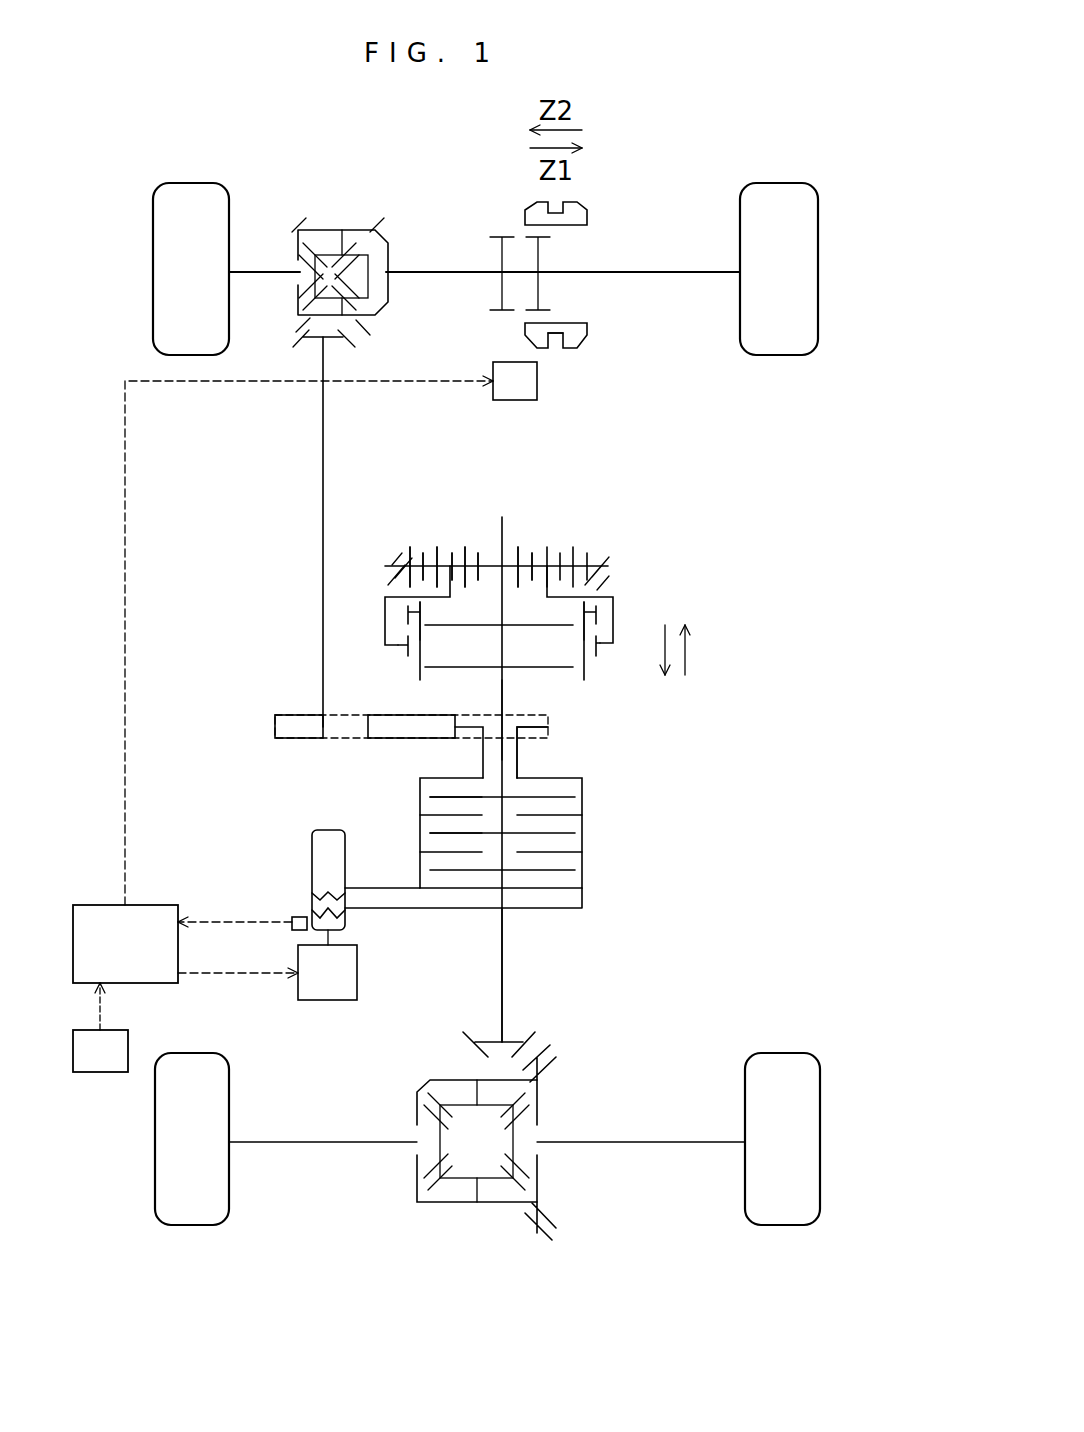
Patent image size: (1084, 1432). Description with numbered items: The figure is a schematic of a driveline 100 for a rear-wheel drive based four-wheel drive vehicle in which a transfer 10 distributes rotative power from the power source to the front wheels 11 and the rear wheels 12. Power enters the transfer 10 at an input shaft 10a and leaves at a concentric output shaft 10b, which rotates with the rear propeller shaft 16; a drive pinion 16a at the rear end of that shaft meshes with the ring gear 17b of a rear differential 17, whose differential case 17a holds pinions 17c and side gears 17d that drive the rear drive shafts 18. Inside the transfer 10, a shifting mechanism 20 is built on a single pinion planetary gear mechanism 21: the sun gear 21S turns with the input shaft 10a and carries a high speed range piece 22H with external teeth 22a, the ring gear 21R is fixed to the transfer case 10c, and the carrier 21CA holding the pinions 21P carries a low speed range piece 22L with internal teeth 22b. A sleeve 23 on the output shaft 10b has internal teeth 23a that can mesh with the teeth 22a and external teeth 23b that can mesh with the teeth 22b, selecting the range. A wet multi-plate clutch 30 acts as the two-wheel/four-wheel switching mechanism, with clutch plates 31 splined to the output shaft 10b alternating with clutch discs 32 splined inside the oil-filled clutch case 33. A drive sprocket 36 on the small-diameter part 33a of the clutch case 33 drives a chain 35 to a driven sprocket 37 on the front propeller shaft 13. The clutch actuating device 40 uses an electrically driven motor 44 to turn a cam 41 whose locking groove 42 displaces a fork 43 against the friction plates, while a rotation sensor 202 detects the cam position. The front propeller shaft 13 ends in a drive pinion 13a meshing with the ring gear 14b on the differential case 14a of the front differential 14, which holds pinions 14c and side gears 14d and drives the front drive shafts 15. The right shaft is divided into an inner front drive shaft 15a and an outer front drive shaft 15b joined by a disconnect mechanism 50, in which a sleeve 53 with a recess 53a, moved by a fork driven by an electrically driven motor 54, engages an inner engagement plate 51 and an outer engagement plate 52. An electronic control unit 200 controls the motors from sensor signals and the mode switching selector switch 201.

The driveline 100 is at (713, 166).
The front wheel 11 is at (205, 183).
The rear wheel 12 is at (195, 1225).
The front drive shaft 15 is at (254, 272).
The inner front drive shaft 15a is at (430, 268).
The outer front drive shaft 15b is at (668, 272).
The front differential 14 is at (341, 252).
The differential case 14a is at (388, 236).
The ring gear 14b is at (312, 225).
The pinion 14c is at (330, 240).
The side gear 14d is at (304, 296).
The front propeller shaft 13 is at (322, 540).
The drive pinion 13a is at (306, 347).
The disconnect mechanism 50 is at (550, 315).
The inner engagement plate 51 is at (502, 265).
The outer engagement plate 52 is at (540, 292).
The sleeve 53 is at (526, 330).
The recess 53a is at (556, 348).
The electrically driven motor 54 is at (500, 402).
The transfer 10 is at (560, 738).
The input shaft 10a is at (502, 520).
The output shaft 10b is at (502, 688).
The transfer case 10c is at (610, 560).
The shifting mechanism 20 is at (528, 548).
The planetary gear mechanism 21 is at (590, 525).
The sun gear 21S is at (476, 552).
The pinion 21P is at (436, 553).
The ring gear 21R is at (420, 555).
The carrier 21CA is at (615, 595).
The high speed range piece 22H is at (452, 628).
The low speed range piece 22L is at (615, 628).
The external teeth 22a is at (412, 660).
The internal teeth 22b is at (594, 650).
The sleeve 23 is at (560, 644).
The internal teeth 23a is at (406, 628).
The external teeth 23b is at (610, 600).
The chain 35 is at (368, 705).
The drive sprocket 36 is at (455, 738).
The driven sprocket 37 is at (275, 718).
The wet multi-plate clutch 30 is at (524, 830).
The clutch plate 31 is at (585, 800).
The clutch disc 32 is at (436, 822).
The clutch case 33 is at (584, 782).
The small-diameter part 33a is at (520, 772).
The clutch actuating device 40 is at (406, 891).
The cam 41 is at (312, 845).
The locking groove 42 is at (320, 898).
The fork 43 is at (383, 910).
The electrically driven motor 44 is at (298, 990).
The rear propeller shaft 16 is at (502, 962).
The drive pinion 16a is at (478, 1050).
The rear differential 17 is at (477, 1175).
The differential case 17a is at (428, 1080).
The ring gear 17b is at (538, 1233).
The pinion 17c is at (525, 1096).
The side gear 17d is at (520, 1128).
The rear drive shaft 18 is at (300, 1142).
The electronic control unit 200 is at (106, 905).
The mode switching selector switch 201 is at (90, 1072).
The rotation sensor 202 is at (295, 917).